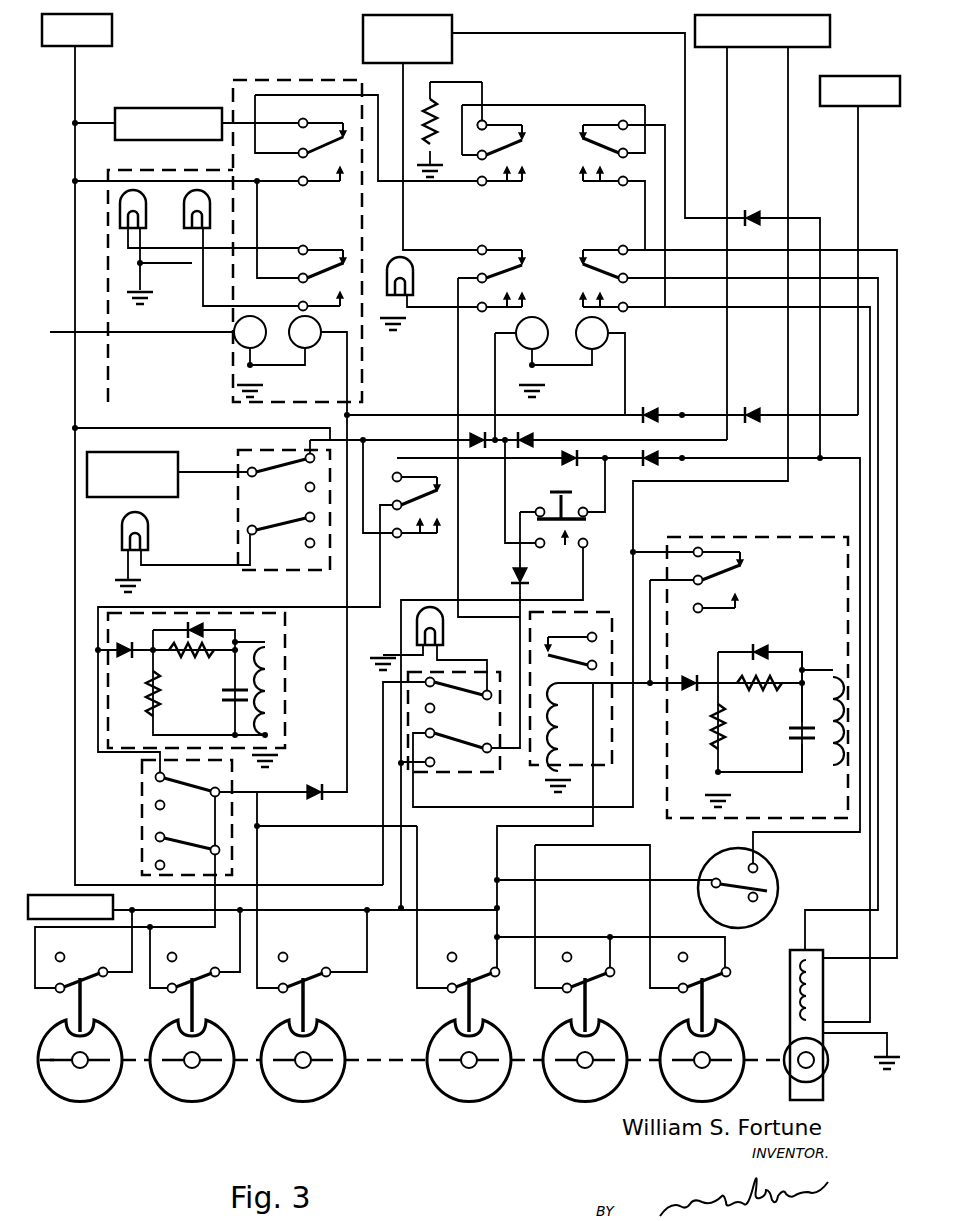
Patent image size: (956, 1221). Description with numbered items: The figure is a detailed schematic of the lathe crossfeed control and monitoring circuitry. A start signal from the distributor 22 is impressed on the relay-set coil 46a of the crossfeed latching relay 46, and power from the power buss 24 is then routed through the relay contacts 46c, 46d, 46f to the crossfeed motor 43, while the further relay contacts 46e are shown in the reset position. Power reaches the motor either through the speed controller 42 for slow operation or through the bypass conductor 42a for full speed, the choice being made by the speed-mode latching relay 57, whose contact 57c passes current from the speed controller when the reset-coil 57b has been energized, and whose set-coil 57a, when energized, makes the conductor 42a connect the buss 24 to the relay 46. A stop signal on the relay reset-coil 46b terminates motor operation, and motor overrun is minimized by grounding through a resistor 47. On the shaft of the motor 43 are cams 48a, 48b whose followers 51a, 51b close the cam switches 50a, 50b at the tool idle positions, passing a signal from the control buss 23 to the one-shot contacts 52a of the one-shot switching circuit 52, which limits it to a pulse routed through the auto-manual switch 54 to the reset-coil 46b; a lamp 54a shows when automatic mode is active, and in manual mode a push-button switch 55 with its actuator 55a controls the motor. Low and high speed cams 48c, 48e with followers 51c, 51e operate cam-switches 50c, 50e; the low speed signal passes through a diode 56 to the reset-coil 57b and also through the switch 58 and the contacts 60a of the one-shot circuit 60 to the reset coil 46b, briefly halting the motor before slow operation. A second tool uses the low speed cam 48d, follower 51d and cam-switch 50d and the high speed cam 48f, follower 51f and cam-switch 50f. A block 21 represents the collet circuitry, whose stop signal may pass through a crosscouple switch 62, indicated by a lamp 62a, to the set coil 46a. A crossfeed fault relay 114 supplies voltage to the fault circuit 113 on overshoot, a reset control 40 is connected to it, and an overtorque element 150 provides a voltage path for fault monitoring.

The power buss 24 is at (119, 41).
The speed controller 42 is at (164, 108).
The bypass conductor 42a is at (158, 180).
The speed-mode latching relay 57 is at (190, 364).
The set-coil 57a is at (234, 330).
The reset-coil 57b is at (312, 350).
The contact 57c is at (303, 148).
The fault circuit 113 is at (452, 18).
The resistor 47 is at (438, 124).
The crossfeed latching relay 46 is at (559, 240).
The relay-set coil 46a is at (513, 331).
The relay reset-coil 46b is at (608, 333).
The relay contacts 46c is at (508, 182).
The relay contacts 46d is at (590, 182).
The relay contacts 46e is at (504, 260).
The relay contacts 46f is at (602, 254).
The distributor 22 is at (696, 16).
The reset switch 40 is at (871, 76).
The block representative of the collet circuitry 21 is at (154, 450).
The crosscouple switch 62 is at (234, 482).
The lamp 62a is at (152, 544).
The one-shot circuit 60 is at (286, 694).
The contacts of the one-shot circuit 60a is at (420, 530).
The push-button switch 55 is at (567, 546).
The push button switch 55a is at (540, 510).
The one-shot switching circuit 52 is at (817, 618).
The one-shot contacts 52a is at (748, 574).
The diode 56 is at (318, 780).
The switch 58 is at (200, 826).
The auto-manual switch 54 is at (508, 672).
The lamp 54a is at (444, 636).
The crossfeed fault relay 114 is at (546, 768).
The control buss 23 is at (53, 895).
The overtorque element 150 is at (780, 890).
The motor 43 is at (788, 976).
The cam switch 50a is at (699, 964).
The cam switch 50b is at (592, 944).
The cam-switch 50c is at (476, 952).
The cam-switch 50d is at (346, 940).
The cam-switch 50e is at (216, 950).
The cam-switch 50f is at (96, 950).
The follower 51a is at (700, 1012).
The follower 51b is at (584, 1012).
The cam follower 51c is at (468, 1008).
The follower 51d is at (313, 1010).
The cam follower 51e is at (194, 1010).
The follower 51f is at (82, 1008).
The cam 48a is at (660, 1062).
The cam 48b is at (575, 1100).
The motor shaft cam 48c is at (462, 1102).
The low speed cam 48d is at (300, 1104).
The motor shaft cam 48e is at (188, 1104).
The high speed cam 48f is at (76, 1104).